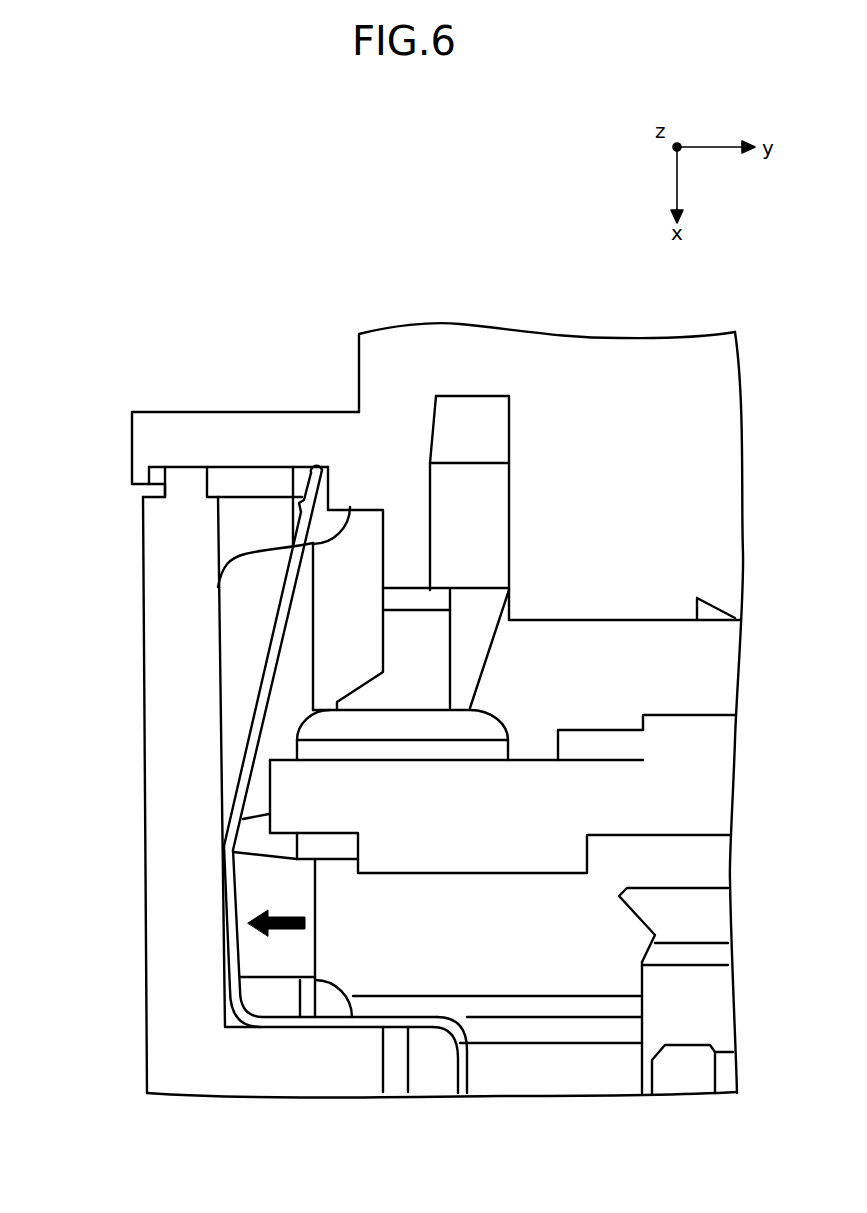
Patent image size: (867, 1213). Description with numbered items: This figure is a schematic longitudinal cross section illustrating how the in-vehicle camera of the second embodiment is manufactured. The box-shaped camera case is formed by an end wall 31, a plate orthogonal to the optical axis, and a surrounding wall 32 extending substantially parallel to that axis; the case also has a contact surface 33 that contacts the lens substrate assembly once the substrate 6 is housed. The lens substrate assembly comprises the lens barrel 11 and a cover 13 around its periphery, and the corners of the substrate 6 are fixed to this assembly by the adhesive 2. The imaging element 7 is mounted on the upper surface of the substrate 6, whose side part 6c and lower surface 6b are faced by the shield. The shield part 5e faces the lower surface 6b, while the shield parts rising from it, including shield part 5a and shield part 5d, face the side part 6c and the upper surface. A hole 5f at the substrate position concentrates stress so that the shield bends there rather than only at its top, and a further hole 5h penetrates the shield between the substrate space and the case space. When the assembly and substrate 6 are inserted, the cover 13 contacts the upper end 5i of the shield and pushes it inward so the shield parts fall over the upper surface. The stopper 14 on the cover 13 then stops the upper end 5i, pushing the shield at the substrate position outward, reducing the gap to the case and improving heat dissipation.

The lens barrel 11 is at (358, 367).
The cover 13 is at (242, 428).
The contact surface 33 is at (182, 465).
The surrounding wall 32 is at (160, 547).
The shield part 5d is at (245, 597).
The stopper 14 is at (360, 487).
The upper end of the shield 5i is at (318, 472).
The shield part 5a is at (272, 661).
The adhesive 2 is at (323, 727).
The side part of the substrate 6c is at (270, 780).
The substrate 6 is at (285, 797).
The imaging element 7 is at (668, 725).
The hole of the shield 5f is at (220, 833).
The lower surface of the substrate 6b is at (335, 833).
The hole of the shield 5h is at (263, 1030).
The end wall 31 is at (310, 1075).
The shield part 5e is at (355, 1030).